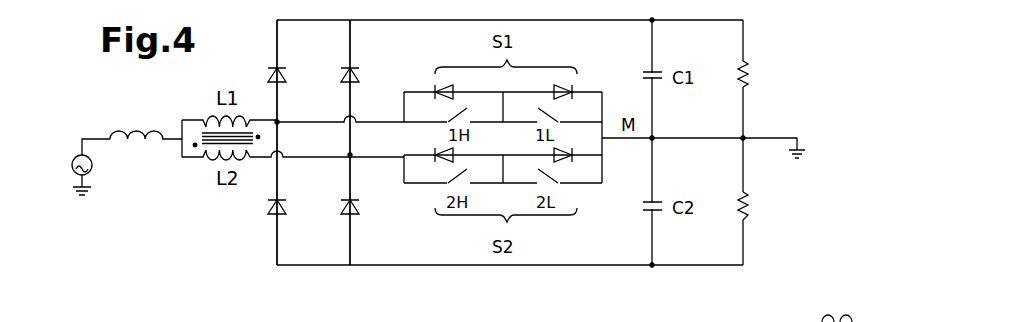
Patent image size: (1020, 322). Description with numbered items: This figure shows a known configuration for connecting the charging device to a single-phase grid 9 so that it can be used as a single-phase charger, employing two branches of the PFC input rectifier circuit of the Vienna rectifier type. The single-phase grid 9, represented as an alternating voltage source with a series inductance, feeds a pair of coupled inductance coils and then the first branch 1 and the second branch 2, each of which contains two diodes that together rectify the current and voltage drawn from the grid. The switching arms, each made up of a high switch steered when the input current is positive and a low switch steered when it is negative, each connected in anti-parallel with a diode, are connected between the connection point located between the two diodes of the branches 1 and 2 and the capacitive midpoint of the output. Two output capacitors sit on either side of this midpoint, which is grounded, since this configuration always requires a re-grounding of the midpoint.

The first branch 1 is at (277, 238).
The second branch 2 is at (350, 237).
The single-phase grid 9 is at (58, 162).